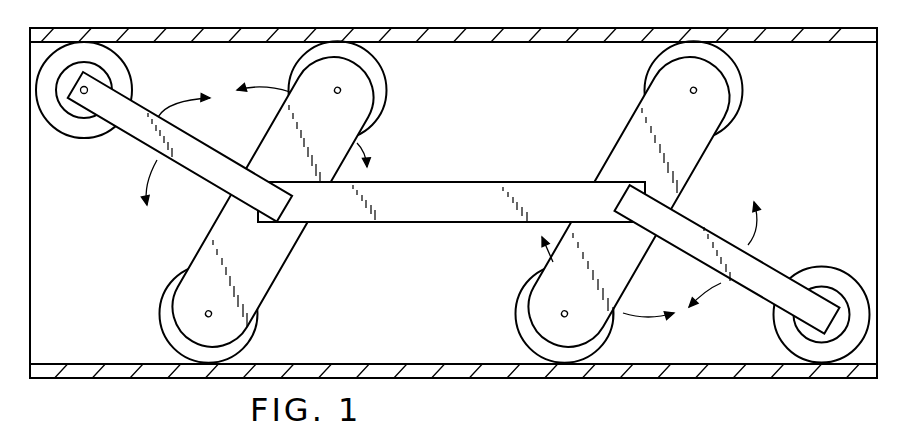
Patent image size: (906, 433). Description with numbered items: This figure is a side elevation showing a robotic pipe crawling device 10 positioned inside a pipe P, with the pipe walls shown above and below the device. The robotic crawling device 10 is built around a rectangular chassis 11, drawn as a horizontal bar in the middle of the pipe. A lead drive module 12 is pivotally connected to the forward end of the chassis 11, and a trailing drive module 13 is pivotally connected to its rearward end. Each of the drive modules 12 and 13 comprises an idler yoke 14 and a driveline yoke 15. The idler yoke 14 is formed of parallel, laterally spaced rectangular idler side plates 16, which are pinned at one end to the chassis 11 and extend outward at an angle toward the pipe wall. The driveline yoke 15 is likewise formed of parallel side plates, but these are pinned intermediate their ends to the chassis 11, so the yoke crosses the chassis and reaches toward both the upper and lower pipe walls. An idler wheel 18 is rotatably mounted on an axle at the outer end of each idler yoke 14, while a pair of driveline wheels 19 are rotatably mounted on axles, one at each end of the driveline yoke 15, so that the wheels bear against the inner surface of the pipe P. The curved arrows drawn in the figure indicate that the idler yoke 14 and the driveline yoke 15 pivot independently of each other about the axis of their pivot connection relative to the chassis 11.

The pipe P is at (517, 28).
The robotic pipe crawling device 10 is at (453, 201).
The rectangular chassis 11 is at (439, 182).
The lead drive module 12 is at (755, 167).
The trailing drive module 13 is at (311, 233).
The idler yoke 14 is at (148, 117).
The driveline yoke 15 is at (616, 157).
The idler side plates 16 is at (218, 145).
The idler wheel 18 is at (126, 65).
The driveline wheels 19 is at (379, 65).